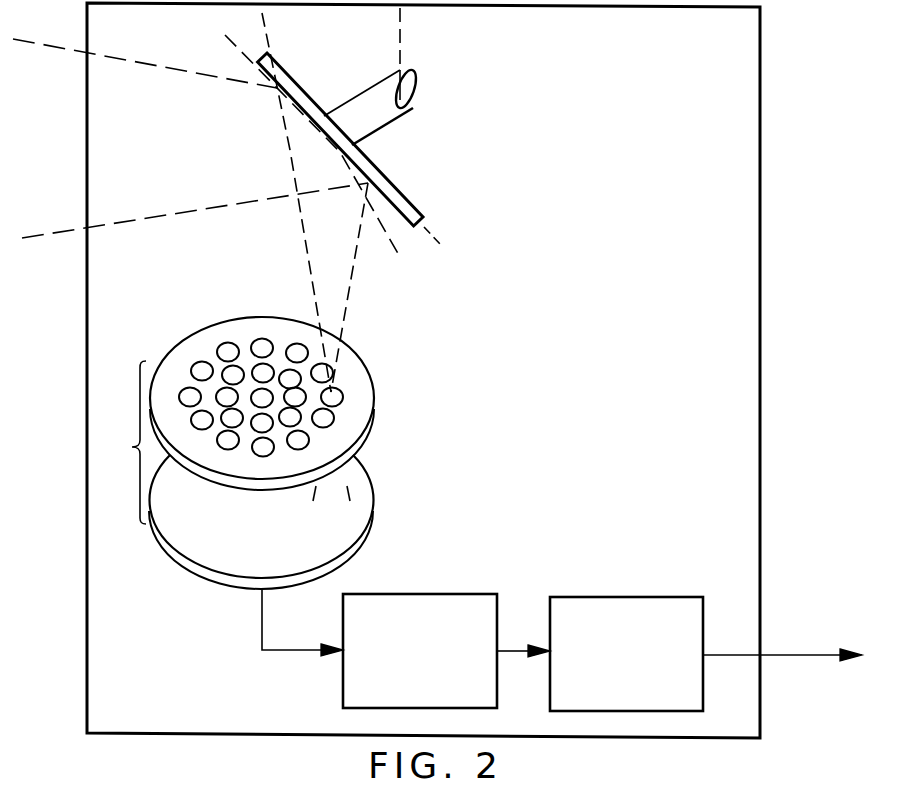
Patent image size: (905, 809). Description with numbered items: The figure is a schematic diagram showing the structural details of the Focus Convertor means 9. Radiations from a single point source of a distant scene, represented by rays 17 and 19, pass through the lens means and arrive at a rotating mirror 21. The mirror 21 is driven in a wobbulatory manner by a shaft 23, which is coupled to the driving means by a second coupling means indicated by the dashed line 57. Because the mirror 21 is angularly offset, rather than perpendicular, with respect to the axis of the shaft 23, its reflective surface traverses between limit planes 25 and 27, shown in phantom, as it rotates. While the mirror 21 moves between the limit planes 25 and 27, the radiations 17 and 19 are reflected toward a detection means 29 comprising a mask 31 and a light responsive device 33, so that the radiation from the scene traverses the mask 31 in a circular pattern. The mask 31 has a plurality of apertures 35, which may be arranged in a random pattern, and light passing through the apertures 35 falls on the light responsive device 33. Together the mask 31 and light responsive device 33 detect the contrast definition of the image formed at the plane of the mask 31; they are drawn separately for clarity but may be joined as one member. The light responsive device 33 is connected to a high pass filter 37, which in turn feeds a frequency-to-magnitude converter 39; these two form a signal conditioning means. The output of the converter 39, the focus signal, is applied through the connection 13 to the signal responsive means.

The Focus Convertor means 9 is at (122, 733).
The connection 13 is at (802, 657).
The ray 17 is at (152, 66).
The ray 19 is at (153, 217).
The rotating mirror 21 is at (399, 190).
The shaft 23 is at (384, 134).
The limit plane 25 is at (400, 263).
The limit plane 27 is at (432, 246).
The detection means 29 is at (124, 442).
The mask 31 is at (372, 372).
The light responsive device 33 is at (373, 500).
The apertures 35 is at (335, 422).
The high pass filter 37 is at (447, 594).
The frequency-to-magnitude converter 39 is at (657, 597).
The second coupling means 57 is at (399, 42).